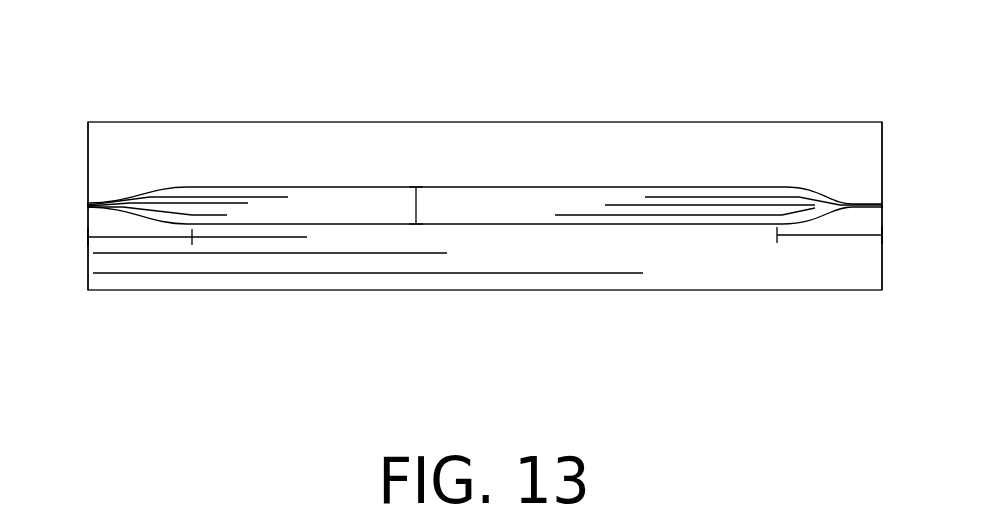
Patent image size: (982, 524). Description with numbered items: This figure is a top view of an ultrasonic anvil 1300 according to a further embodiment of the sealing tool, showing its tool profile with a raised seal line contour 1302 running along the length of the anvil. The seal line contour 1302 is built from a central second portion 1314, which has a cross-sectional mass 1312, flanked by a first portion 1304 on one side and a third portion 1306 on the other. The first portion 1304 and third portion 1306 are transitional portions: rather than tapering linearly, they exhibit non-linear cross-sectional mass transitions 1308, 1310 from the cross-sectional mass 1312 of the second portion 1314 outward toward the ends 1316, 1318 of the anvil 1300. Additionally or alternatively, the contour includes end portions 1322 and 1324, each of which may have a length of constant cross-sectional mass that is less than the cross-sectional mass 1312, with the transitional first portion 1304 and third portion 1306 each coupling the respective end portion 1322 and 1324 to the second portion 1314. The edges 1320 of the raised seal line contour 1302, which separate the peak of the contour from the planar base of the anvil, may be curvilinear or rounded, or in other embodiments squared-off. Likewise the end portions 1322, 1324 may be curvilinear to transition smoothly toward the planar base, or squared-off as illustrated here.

The ultrasonic anvil 1300 is at (563, 63).
The seal line contour 1302 is at (312, 197).
The first portion 1304 is at (163, 193).
The third portion 1306 is at (809, 195).
The non-linear cross-sectional mass transition 1308 is at (142, 235).
The non-linear cross-sectional mass transition 1310 is at (827, 235).
The cross-sectional mass 1312 is at (413, 206).
The second portion 1314 is at (485, 200).
The end of the anvil 1316 is at (88, 148).
The end of the anvil 1318 is at (882, 148).
The edges 1320 is at (722, 187).
The end portion 1322 is at (88, 207).
The end portion 1324 is at (882, 205).